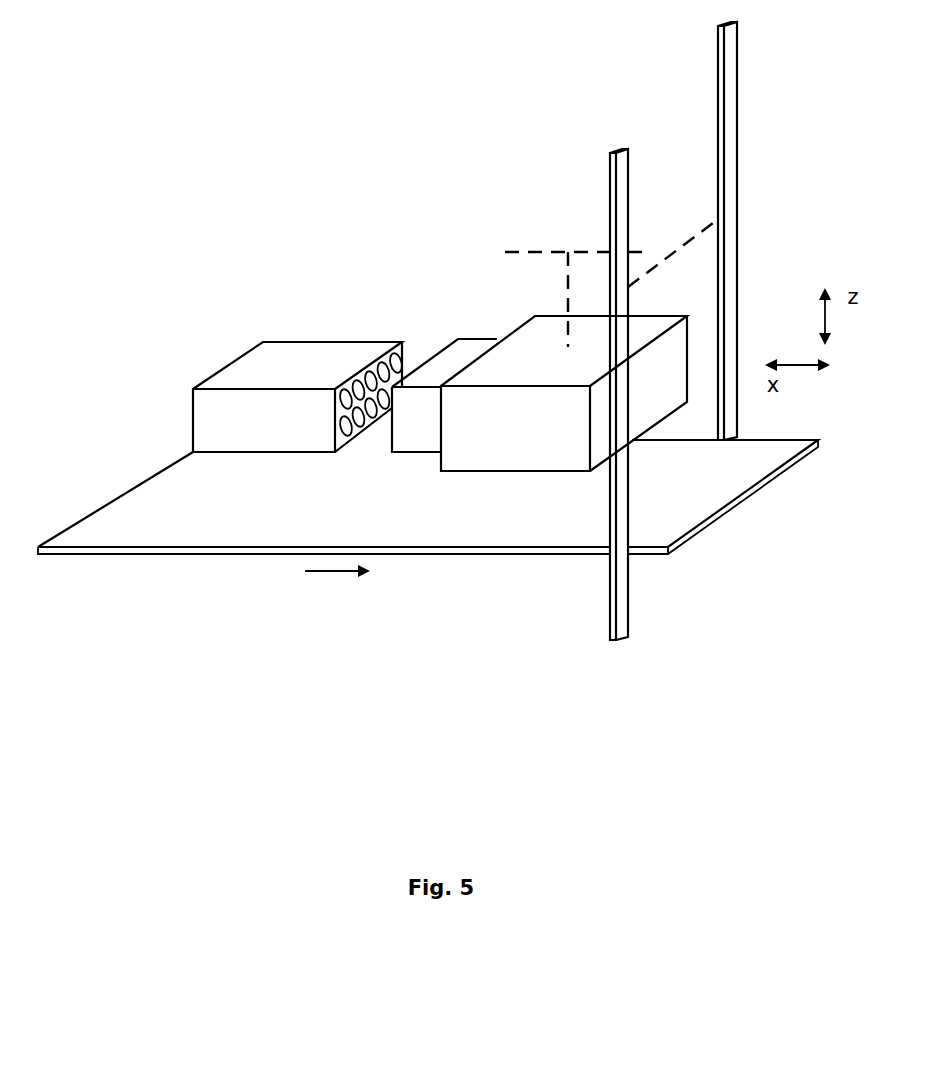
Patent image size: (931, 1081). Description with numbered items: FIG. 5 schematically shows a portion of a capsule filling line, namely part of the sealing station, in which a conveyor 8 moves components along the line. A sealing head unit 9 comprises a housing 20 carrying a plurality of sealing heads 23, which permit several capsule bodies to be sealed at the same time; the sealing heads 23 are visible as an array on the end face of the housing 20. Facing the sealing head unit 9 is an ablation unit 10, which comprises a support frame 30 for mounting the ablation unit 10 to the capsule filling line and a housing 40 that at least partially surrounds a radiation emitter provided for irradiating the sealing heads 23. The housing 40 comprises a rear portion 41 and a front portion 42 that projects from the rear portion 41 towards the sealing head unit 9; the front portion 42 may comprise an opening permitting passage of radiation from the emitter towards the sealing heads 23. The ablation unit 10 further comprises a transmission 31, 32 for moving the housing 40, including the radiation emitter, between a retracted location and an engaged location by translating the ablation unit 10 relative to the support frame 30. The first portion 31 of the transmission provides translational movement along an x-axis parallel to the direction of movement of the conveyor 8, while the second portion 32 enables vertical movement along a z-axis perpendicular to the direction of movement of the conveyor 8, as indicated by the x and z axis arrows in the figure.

The conveyor 8 is at (690, 510).
The sealing head unit 9 is at (268, 348).
The ablation unit 10 is at (487, 483).
The housing 20 is at (213, 418).
The sealing heads 23 is at (400, 366).
The support frame 30 is at (618, 575).
The first portion of the transmission 31 is at (580, 250).
The second portion of the transmission 32 is at (693, 240).
The housing 40 is at (423, 431).
The rear portion 41 is at (535, 438).
The front portion 42 is at (403, 440).